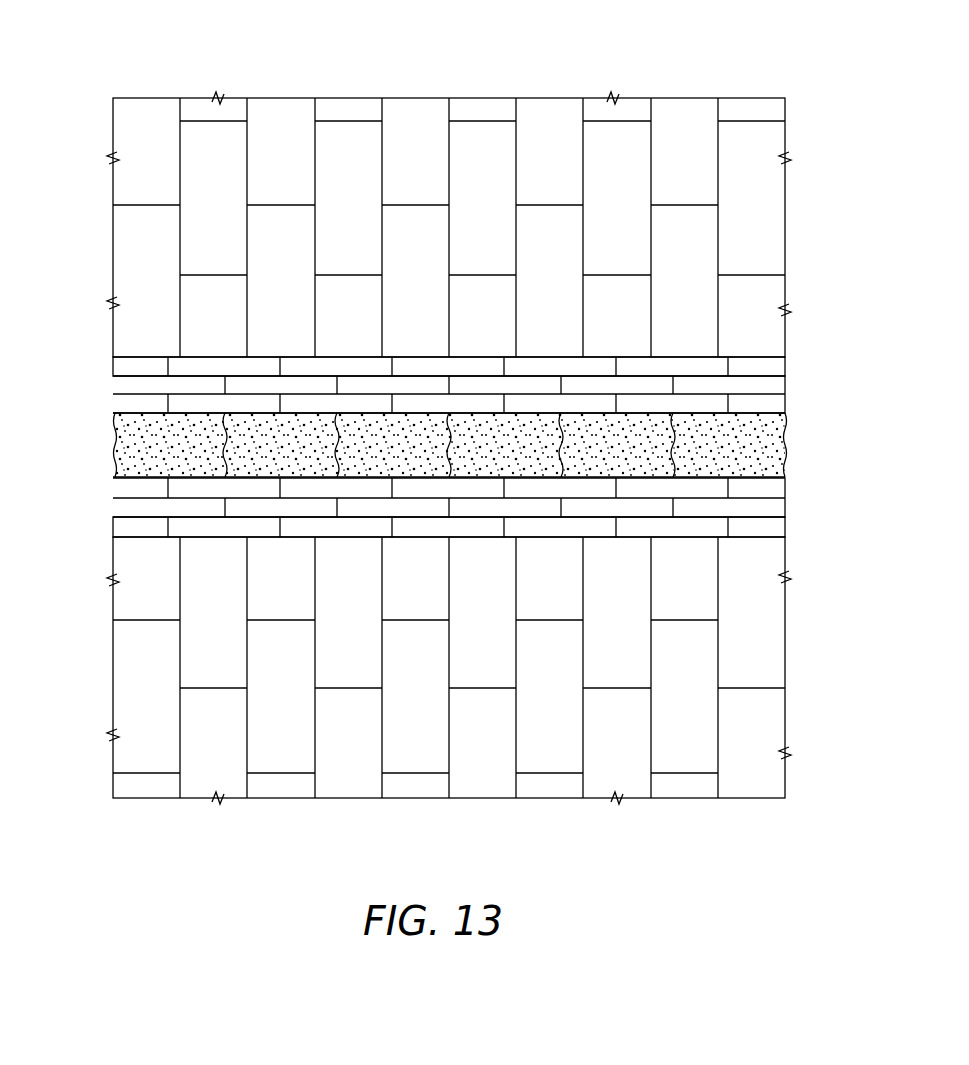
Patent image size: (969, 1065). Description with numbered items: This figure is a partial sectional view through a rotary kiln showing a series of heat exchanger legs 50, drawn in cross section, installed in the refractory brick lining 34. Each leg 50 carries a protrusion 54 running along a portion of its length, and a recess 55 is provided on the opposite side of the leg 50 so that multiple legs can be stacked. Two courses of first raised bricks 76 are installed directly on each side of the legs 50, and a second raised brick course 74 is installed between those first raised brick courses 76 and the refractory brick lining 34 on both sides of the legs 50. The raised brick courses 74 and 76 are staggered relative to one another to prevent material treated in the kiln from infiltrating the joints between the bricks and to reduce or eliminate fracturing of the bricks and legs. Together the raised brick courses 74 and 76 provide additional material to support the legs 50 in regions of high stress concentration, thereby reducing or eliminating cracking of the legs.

The refractory brick lining 34 is at (670, 125).
The second raised brick course 74 is at (180, 368).
The first raised brick course 76 is at (107, 415).
The heat exchanger leg 50 is at (112, 450).
The recess 55 is at (112, 437).
The protrusion 54 is at (788, 445).